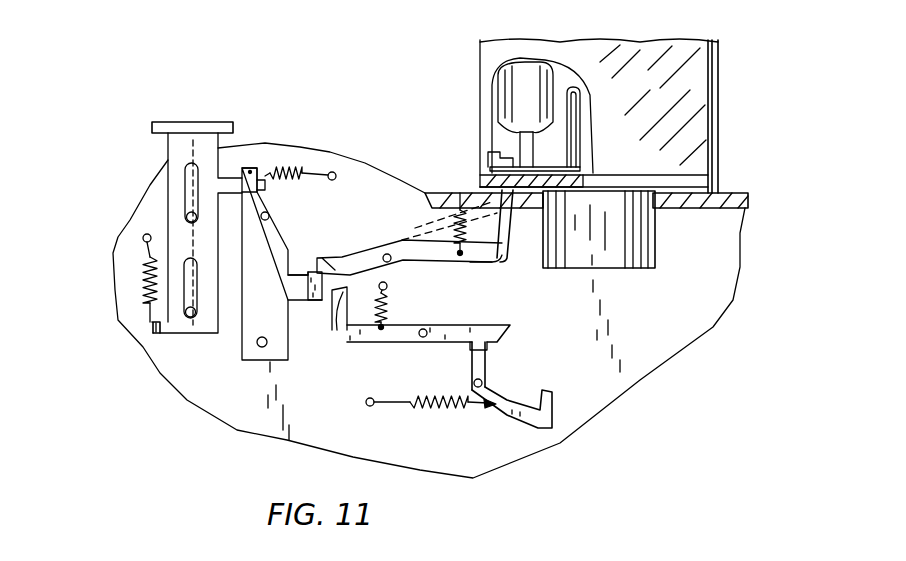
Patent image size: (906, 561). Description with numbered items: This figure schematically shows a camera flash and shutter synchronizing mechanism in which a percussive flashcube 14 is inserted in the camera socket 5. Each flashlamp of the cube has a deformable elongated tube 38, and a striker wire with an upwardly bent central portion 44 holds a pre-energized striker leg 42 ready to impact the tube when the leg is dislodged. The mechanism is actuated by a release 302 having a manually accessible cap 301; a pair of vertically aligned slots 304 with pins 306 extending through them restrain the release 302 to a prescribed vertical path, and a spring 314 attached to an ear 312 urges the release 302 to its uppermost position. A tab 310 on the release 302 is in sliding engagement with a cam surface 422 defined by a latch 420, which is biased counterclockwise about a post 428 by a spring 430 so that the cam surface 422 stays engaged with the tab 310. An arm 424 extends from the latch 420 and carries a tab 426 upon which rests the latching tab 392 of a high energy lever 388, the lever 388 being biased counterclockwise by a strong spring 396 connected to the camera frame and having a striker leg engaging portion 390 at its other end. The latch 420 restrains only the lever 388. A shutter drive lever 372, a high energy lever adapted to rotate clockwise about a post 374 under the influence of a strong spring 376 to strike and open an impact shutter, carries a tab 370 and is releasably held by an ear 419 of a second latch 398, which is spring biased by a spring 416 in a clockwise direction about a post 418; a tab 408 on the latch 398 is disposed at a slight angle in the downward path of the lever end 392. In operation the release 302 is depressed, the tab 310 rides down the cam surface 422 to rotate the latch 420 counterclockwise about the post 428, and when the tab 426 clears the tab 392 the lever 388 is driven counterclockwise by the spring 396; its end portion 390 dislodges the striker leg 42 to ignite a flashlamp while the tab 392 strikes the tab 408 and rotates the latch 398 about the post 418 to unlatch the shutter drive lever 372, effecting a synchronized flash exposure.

The camera socket 5 is at (612, 258).
The percussive flashcube 14 is at (722, 100).
The elongated tube 38 is at (492, 120).
The striker leg 42 is at (488, 153).
The upwardly bent central portion 44 is at (587, 128).
The cap 301 is at (183, 122).
The release 302 is at (183, 152).
The slots 304 is at (188, 175).
The pins 306 is at (188, 217).
The tab 310 is at (265, 184).
The ear 312 is at (150, 332).
The spring 314 is at (142, 275).
The tab 370 is at (473, 355).
The shutter drive lever 372 is at (492, 374).
The post 374 is at (473, 383).
The spring 376 is at (437, 407).
The high energy lever 388 is at (478, 256).
The striker leg engaging portion 390 is at (515, 222).
The latching tab 392 is at (325, 260).
The spring 396 is at (437, 213).
The second latch 398 is at (452, 335).
The tab 408 is at (338, 318).
The spring 416 is at (385, 300).
The post 418 is at (425, 330).
The ear 419 is at (490, 348).
The latch 420 is at (258, 250).
The cam surface 422 is at (268, 214).
The arm 424 is at (312, 300).
The tab 426 is at (313, 267).
The post 428 is at (260, 347).
The spring 430 is at (272, 170).